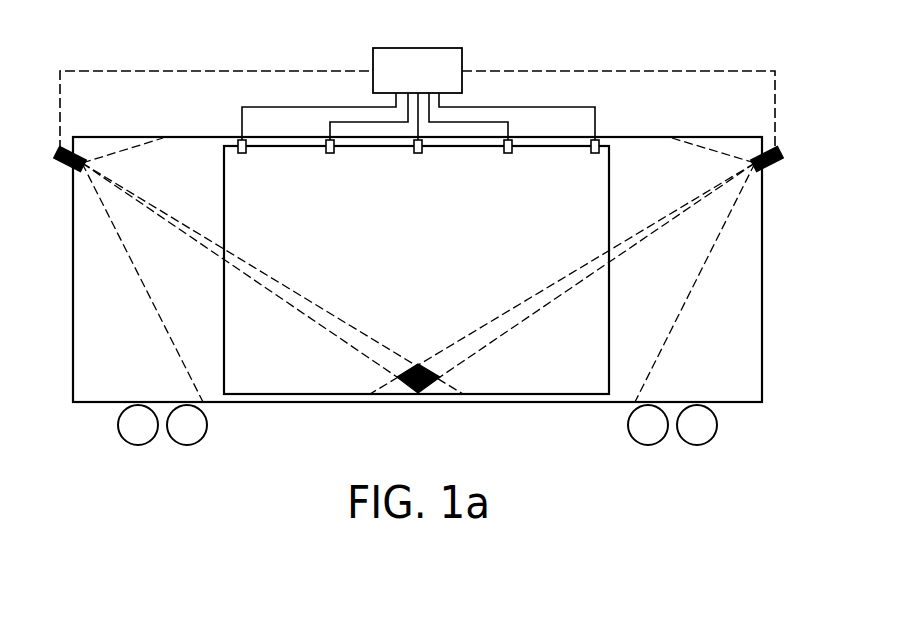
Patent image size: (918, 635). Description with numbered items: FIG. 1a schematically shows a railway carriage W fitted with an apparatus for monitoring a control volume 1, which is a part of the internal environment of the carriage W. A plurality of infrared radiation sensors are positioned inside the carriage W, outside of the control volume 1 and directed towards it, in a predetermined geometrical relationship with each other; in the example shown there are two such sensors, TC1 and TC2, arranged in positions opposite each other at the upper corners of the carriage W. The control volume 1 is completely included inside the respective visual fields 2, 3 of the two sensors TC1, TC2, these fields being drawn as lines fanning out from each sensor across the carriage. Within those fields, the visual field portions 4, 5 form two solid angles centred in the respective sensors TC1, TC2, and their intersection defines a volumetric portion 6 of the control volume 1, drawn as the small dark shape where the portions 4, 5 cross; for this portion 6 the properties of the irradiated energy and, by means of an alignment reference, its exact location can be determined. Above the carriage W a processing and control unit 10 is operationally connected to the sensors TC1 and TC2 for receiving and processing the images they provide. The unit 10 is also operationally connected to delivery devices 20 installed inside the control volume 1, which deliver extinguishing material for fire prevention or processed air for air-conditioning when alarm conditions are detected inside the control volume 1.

The control volume 1 is at (224, 230).
The visual field 2 is at (136, 275).
The visual field 3 is at (674, 322).
The visual field portion 4 is at (181, 222).
The visual field portion 5 is at (650, 224).
The volumetric portion 6 is at (418, 364).
The processing and control unit 10 is at (463, 64).
The delivery devices 20 is at (508, 153).
The infrared radiation sensor TC1 is at (62, 166).
The infrared radiation sensor TC2 is at (776, 168).
The railway carriage W is at (82, 410).